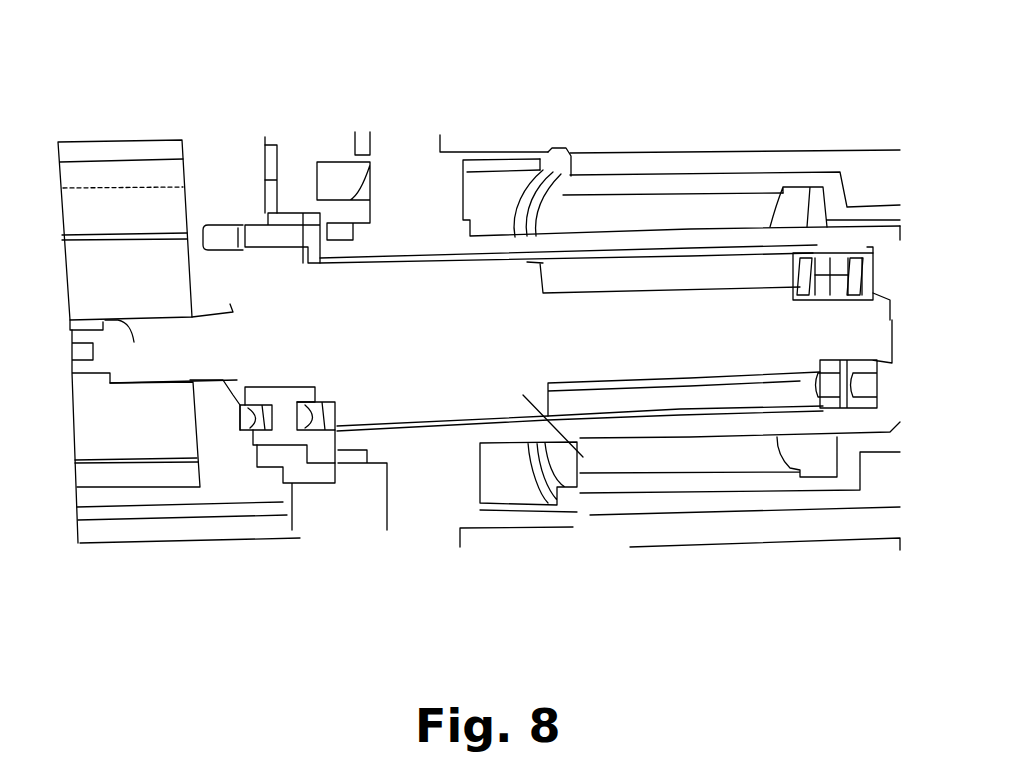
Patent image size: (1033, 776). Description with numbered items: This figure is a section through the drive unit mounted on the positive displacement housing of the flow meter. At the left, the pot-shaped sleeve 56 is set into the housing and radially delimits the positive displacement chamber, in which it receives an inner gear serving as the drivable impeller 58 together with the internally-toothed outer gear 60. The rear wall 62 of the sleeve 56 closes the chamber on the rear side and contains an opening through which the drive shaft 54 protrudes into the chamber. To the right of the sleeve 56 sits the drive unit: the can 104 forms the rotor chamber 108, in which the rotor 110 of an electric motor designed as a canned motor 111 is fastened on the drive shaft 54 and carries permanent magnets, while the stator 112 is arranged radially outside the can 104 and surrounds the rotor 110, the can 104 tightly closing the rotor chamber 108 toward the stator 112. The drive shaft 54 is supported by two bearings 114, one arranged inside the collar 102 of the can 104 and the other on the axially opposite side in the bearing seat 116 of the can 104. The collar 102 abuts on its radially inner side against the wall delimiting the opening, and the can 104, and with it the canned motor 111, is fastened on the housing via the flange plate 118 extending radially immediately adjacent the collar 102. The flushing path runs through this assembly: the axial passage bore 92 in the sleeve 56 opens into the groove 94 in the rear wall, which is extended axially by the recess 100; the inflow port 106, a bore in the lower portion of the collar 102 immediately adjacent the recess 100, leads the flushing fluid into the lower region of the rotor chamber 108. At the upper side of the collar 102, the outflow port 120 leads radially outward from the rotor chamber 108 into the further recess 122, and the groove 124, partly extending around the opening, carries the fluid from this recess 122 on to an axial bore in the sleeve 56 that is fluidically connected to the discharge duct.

The drive shaft 54 is at (132, 323).
The sleeve 56 is at (125, 528).
The drivable impeller 58 is at (102, 410).
The internally-toothed outer gear 60 is at (93, 477).
The rear wall 62 is at (262, 176).
The axial passage bore 92 is at (97, 517).
The groove 94 is at (283, 483).
The recess 100 is at (317, 473).
The collar 102 is at (287, 455).
The can 104 is at (543, 170).
The inflow port 106 is at (323, 452).
The rotor chamber 108 is at (433, 272).
The rotor 110 is at (577, 487).
The canned motor 111 is at (710, 285).
The stator 112 is at (652, 215).
The bearings 114 is at (268, 422).
The bearing seat 116 is at (847, 410).
The flange plate 118 is at (400, 157).
The outflow port 120 is at (307, 213).
The further recess 122 is at (270, 180).
The groove 124 is at (258, 180).